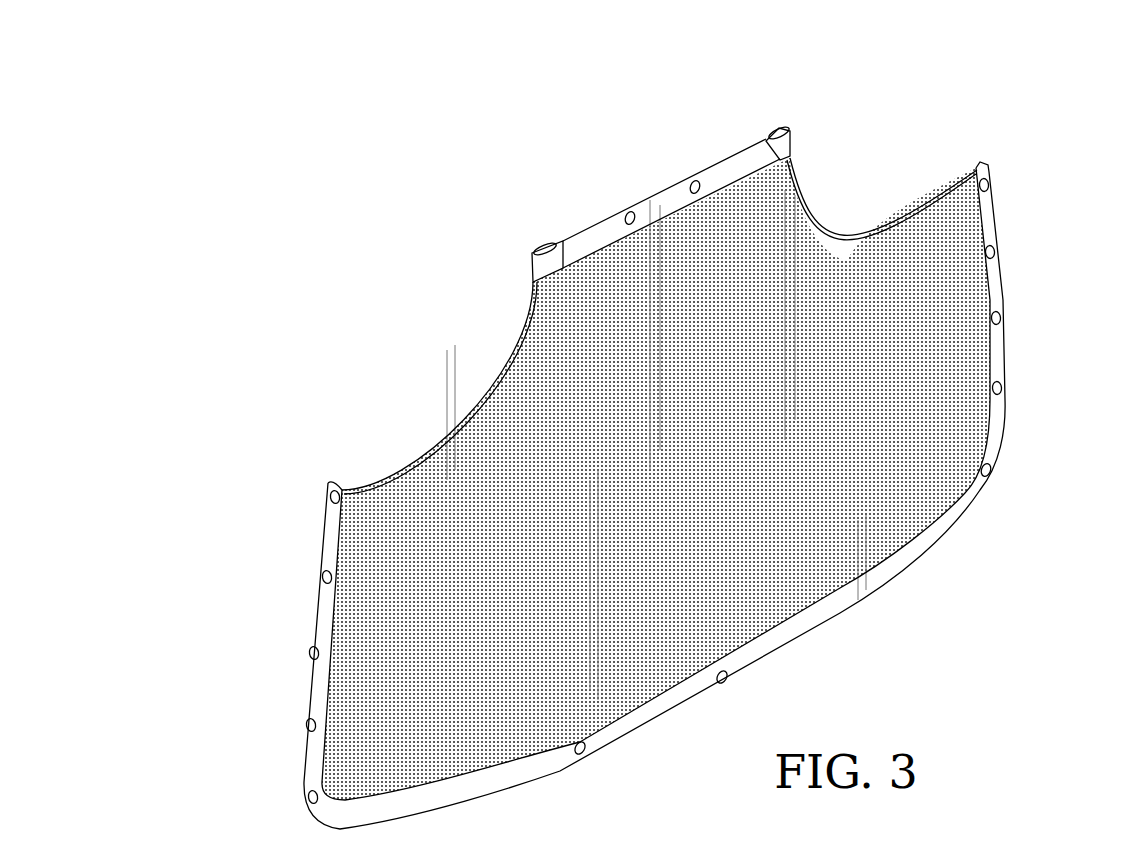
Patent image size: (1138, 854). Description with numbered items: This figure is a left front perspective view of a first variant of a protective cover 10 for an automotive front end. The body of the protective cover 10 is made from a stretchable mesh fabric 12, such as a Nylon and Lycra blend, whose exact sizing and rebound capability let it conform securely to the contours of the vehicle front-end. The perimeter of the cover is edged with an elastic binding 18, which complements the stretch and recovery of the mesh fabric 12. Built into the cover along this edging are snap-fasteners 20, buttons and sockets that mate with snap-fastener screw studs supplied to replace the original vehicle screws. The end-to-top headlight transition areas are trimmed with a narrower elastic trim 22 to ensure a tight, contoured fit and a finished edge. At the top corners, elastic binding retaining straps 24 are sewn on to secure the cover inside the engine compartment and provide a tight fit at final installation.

The protective cover 10 is at (667, 439).
The stretchable mesh fabric 12 is at (975, 420).
The elastic binding 18 is at (598, 222).
The snap-fasteners 20 is at (695, 183).
The elastic trim 22 is at (445, 437).
The elastic binding retaining straps 24 is at (532, 252).